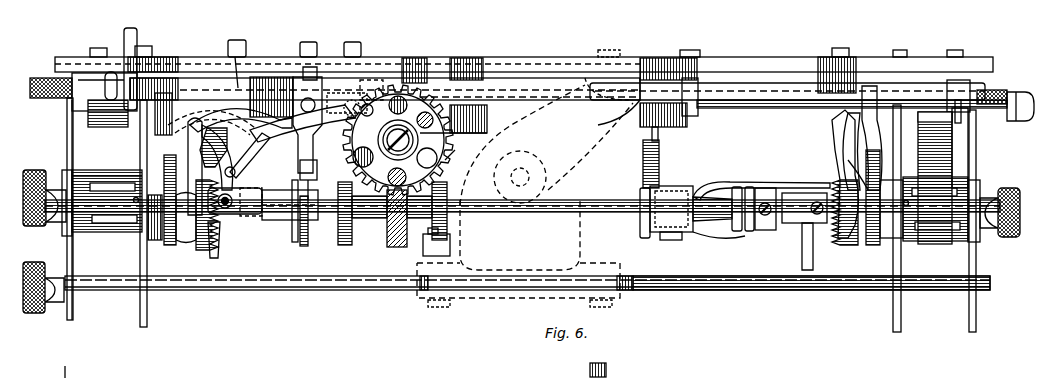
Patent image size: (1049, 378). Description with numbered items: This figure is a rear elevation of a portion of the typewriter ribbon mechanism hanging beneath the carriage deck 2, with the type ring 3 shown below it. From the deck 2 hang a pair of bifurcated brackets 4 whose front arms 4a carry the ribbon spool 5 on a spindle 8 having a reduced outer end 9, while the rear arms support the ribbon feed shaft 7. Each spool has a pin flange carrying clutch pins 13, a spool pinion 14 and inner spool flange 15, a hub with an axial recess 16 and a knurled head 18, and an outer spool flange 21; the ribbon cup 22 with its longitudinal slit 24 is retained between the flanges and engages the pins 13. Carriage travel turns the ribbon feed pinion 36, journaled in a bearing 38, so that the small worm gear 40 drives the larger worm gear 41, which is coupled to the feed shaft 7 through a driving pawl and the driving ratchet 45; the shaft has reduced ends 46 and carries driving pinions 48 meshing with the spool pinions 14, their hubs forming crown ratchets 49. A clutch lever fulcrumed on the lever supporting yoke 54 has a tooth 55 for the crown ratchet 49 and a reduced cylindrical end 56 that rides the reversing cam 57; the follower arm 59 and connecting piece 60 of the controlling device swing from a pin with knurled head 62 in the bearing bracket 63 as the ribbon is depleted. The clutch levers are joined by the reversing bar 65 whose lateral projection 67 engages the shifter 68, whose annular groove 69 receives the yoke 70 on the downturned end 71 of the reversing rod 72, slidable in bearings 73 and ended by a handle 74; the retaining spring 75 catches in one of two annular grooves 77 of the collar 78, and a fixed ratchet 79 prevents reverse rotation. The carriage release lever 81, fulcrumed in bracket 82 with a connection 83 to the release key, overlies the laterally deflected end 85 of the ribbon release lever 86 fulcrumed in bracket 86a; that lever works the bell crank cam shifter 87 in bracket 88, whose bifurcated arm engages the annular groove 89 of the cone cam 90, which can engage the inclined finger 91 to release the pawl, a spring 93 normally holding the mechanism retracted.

The deck 2 is at (771, 70).
The type ring 3 is at (706, 292).
The bracket 4 is at (868, 118).
The front arm 4a is at (188, 152).
The ribbon spool 5 is at (70, 143).
The ribbon feed shaft 7 is at (520, 205).
The spindle 8 is at (289, 371).
The reduced outer end 9 is at (62, 363).
The clutch pin 13 is at (135, 203).
The spool pinion 14 is at (348, 114).
The inner spool flange 15 is at (142, 320).
The axial recess 16 is at (107, 180).
The knurled head 18 is at (24, 228).
The outer spool flange 21 is at (68, 316).
The ribbon cup 22 is at (95, 226).
The longitudinal slit 24 is at (64, 232).
The ribbon feed pinion 36 is at (456, 125).
The bearing 38 is at (440, 122).
The worm gear 40 is at (455, 150).
The worm gear 41 is at (397, 243).
The driving ratchet 45 is at (346, 240).
The reduced end 46 is at (920, 170).
The driving pinion 48 is at (171, 240).
The crown ratchet 49 is at (203, 240).
The lever supporting yoke 54 is at (252, 216).
The tooth 55 is at (244, 183).
The reduced cylindrical end 56 is at (236, 248).
The reversing cam 57 is at (227, 148).
The follower arm 59 is at (90, 122).
The connecting piece 60 is at (890, 92).
The knurled head 62 is at (42, 98).
The bearing bracket 63 is at (88, 76).
The reversing bar 65 is at (292, 130).
The lateral projection 67 is at (700, 197).
The shifter 68 is at (678, 240).
The annular groove 69 is at (648, 238).
The yoke 70 is at (665, 186).
The downturned end 71 is at (660, 145).
The reversing rod 72 is at (780, 108).
The bearing 73 is at (700, 90).
The handle 74 is at (1022, 95).
The retaining spring 75 is at (730, 240).
The annular groove 77 is at (745, 186).
The collar 78 is at (768, 188).
The fixed ratchet 79 is at (448, 208).
The carriage release lever 81 is at (272, 108).
The bracket 82 is at (368, 80).
The connection 83 is at (136, 34).
The laterally deflected end 85 is at (155, 124).
The ribbon release lever 86 is at (270, 127).
The bracket 86a is at (237, 80).
The bell crank cam shifter 87 is at (335, 93).
The bracket 88 is at (308, 67).
The annular groove 89 is at (296, 240).
The cam 90 is at (306, 240).
The inclined finger 91 is at (317, 175).
The spring 93 is at (182, 105).